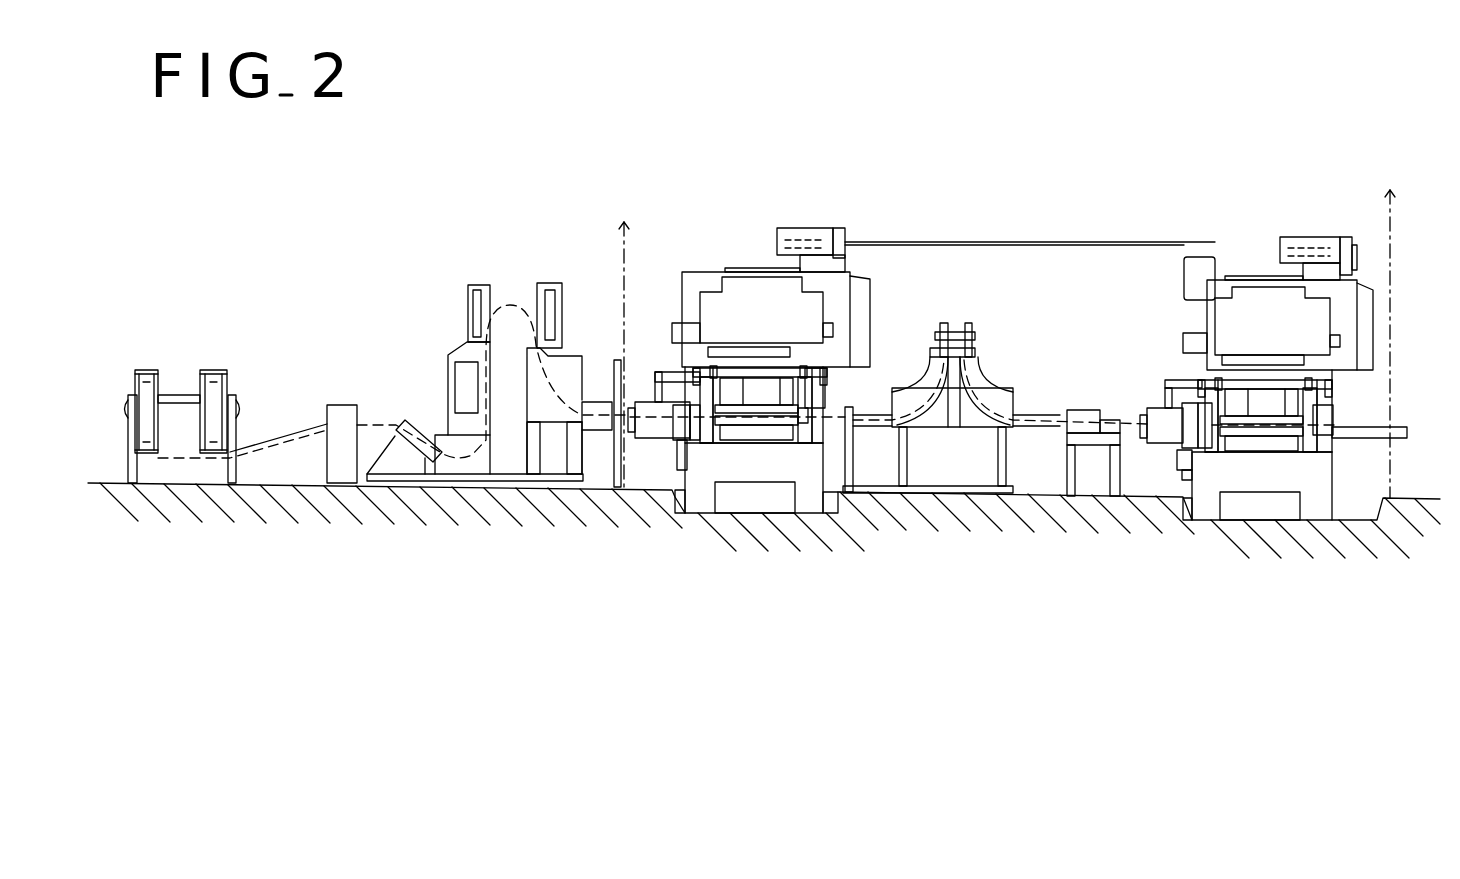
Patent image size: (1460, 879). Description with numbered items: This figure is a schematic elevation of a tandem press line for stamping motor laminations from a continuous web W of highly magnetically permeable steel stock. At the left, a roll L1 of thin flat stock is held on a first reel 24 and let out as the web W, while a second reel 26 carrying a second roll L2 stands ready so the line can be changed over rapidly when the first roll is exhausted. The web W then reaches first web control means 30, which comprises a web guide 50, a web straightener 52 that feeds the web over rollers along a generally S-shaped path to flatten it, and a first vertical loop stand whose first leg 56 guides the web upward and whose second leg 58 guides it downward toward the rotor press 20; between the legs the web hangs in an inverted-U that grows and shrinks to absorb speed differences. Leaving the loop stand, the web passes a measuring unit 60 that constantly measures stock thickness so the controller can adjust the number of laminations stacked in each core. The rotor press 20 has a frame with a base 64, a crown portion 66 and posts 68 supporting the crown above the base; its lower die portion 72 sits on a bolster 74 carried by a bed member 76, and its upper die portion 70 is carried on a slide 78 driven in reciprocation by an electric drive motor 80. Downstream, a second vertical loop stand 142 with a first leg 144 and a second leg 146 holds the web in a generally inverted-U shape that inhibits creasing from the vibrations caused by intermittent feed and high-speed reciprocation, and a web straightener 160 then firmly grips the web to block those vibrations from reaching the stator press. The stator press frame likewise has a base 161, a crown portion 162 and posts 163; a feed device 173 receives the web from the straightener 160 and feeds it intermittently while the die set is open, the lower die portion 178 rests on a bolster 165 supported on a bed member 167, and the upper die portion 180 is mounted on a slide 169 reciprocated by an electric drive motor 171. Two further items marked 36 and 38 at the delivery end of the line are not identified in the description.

The rotor press 20 is at (736, 243).
The first reel 24 is at (205, 372).
The second reel 26 is at (130, 378).
The roll of stock material L1 is at (215, 372).
The second roll of stock material L2 is at (148, 372).
The web W is at (265, 440).
The first web control means 30 is at (500, 243).
The delivery shaft 36 is at (1398, 426).
The delivery centerline 38 is at (1386, 207).
The web guide 50 is at (343, 405).
The web straightener 52 is at (418, 425).
The first leg 56 is at (448, 385).
The second leg 58 is at (572, 352).
The measuring unit 60 is at (606, 400).
The base 64 is at (700, 490).
The crown portion 66 is at (682, 295).
The posts 68 is at (822, 408).
The upper die portion 70 is at (782, 410).
The lower die portion 72 is at (788, 428).
The bolster 74 is at (768, 438).
The bed member 76 is at (742, 445).
The slide 78 is at (745, 405).
The electric drive motor 80 is at (815, 228).
The second vertical loop stand 142 is at (985, 320).
The first leg 144 is at (930, 362).
The second leg 146 is at (978, 376).
The web straightener 160 is at (1085, 410).
The base 161 is at (1208, 484).
The crown portion 162 is at (1210, 308).
The posts 163 is at (1325, 415).
The bolster 165 is at (1267, 448).
The bed member 167 is at (1247, 452).
The slide 169 is at (1243, 413).
The electric drive motor 171 is at (1310, 237).
The feed device 173 is at (1155, 408).
The lower die portion 178 is at (1287, 438).
The upper die portion 180 is at (1278, 418).